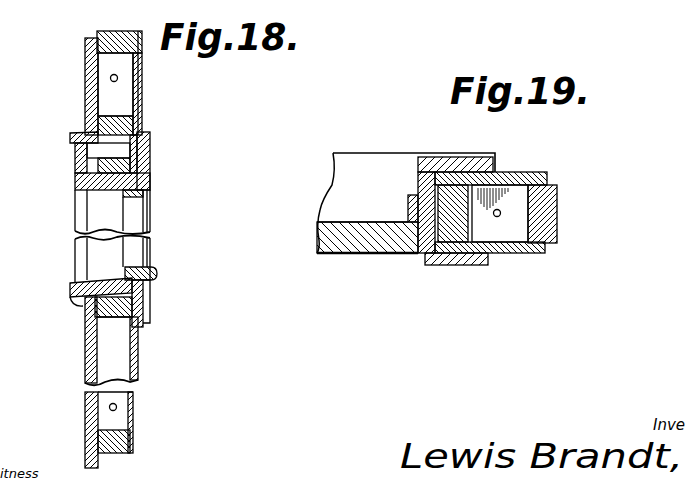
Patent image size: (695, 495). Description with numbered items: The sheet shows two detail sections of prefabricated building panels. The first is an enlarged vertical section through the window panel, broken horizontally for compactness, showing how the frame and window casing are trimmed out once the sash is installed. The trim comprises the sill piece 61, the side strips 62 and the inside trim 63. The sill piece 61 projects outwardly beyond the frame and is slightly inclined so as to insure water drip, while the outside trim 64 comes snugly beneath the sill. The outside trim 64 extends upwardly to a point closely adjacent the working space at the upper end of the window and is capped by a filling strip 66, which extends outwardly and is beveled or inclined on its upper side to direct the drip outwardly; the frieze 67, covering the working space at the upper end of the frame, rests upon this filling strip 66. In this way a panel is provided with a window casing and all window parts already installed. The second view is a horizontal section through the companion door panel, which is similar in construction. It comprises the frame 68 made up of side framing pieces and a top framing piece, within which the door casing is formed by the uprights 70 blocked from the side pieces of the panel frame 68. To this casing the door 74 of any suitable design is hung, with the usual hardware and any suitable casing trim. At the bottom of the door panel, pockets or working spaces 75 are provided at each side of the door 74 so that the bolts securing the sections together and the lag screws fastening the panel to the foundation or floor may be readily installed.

In FIG. 18, the sill piece 61 is at (72, 292).
In FIG. 18, the side strip 62 is at (77, 172).
In FIG. 18, the inside trim 63 is at (152, 160).
In FIG. 18, the outside trim 64 is at (92, 358).
In FIG. 18, the filling strip 66 is at (72, 138).
In FIG. 18, the frieze 67 is at (93, 83).
In FIG. 19, the frame 68 is at (545, 218).
In FIG. 19, the upright 70 is at (458, 232).
In FIG. 19, the door 74 is at (363, 248).
In FIG. 19, the pocket 75 is at (515, 232).